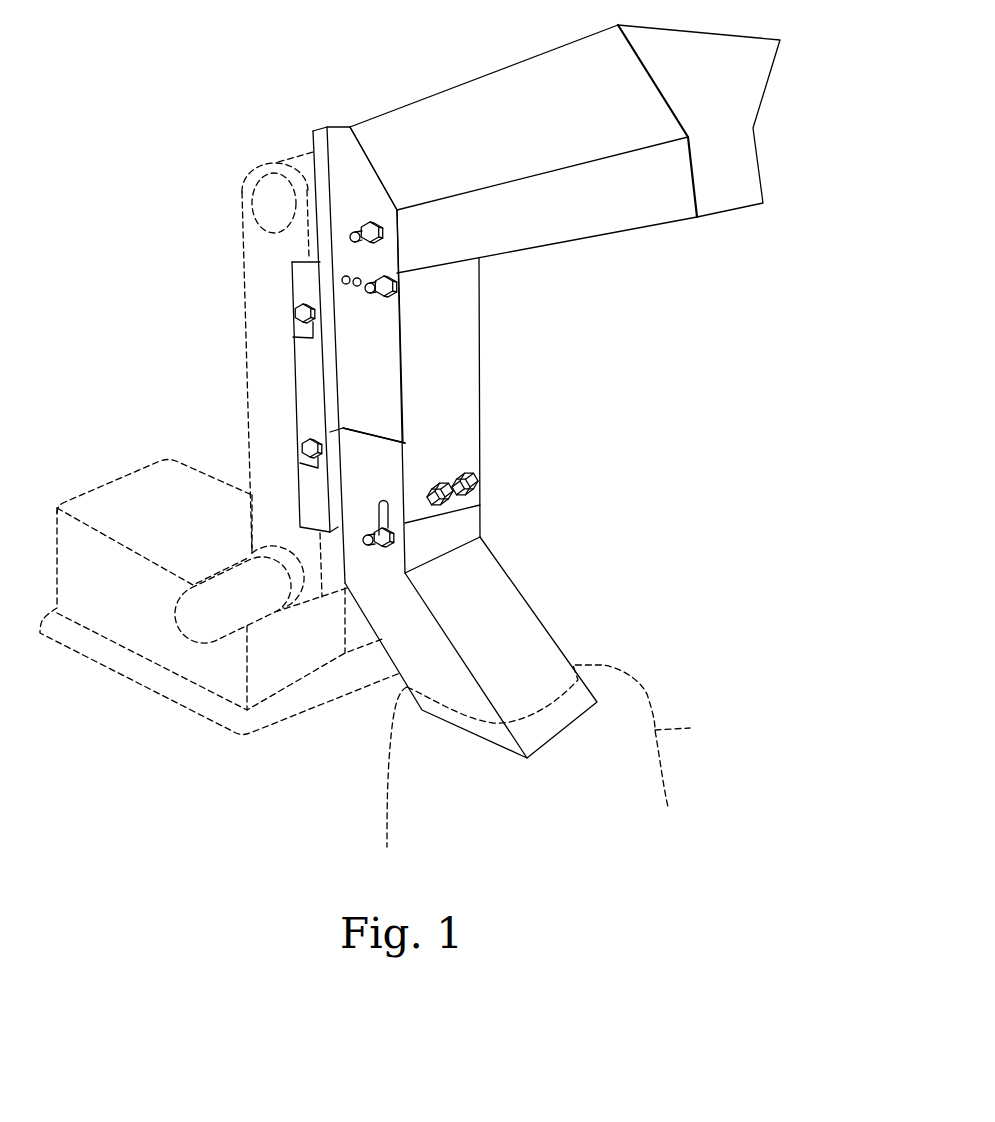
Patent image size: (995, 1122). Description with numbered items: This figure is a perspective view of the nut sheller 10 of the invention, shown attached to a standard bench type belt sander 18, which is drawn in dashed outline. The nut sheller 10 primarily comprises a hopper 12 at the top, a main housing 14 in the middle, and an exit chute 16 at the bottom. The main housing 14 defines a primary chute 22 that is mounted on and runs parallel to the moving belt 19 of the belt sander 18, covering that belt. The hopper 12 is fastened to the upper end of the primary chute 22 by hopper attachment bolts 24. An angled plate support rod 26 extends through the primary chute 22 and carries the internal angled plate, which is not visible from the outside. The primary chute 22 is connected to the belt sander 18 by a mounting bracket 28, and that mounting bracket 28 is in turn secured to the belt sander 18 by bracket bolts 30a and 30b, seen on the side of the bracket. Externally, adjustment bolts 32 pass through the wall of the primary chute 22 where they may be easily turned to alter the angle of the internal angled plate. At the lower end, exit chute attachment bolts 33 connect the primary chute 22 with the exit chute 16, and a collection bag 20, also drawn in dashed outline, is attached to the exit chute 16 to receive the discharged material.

The nut sheller 10 is at (214, 70).
The hopper 12 is at (433, 86).
The main housing 14 is at (499, 308).
The exit chute 16 is at (559, 581).
The belt sander 18 is at (112, 474).
The moving belt 19 is at (248, 167).
The collection bag 20 is at (657, 730).
The primary chute 22 is at (448, 380).
The hopper attachment bolts 24 is at (367, 222).
The angled plate support rod 26 is at (382, 297).
The mounting bracket 28 is at (300, 387).
The bracket bolt 30a is at (293, 308).
The bracket bolt 30b is at (300, 448).
The adjustment bolts 32 is at (451, 506).
The exit chute attachment bolts 33 is at (392, 538).